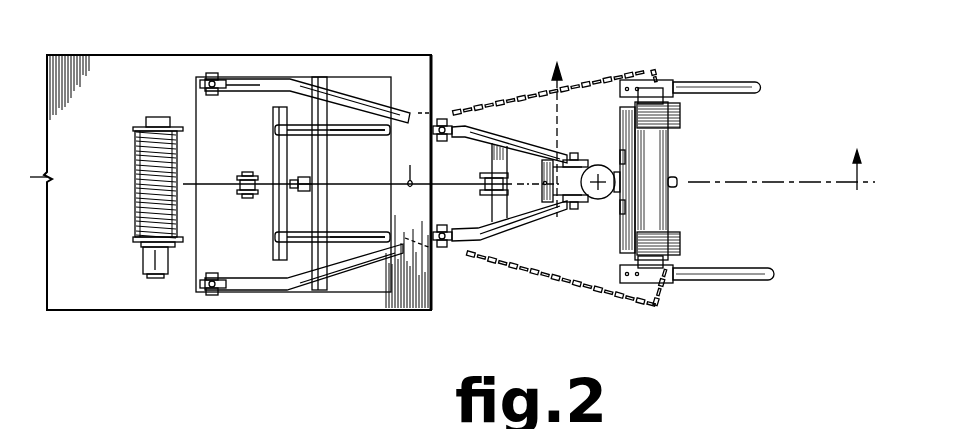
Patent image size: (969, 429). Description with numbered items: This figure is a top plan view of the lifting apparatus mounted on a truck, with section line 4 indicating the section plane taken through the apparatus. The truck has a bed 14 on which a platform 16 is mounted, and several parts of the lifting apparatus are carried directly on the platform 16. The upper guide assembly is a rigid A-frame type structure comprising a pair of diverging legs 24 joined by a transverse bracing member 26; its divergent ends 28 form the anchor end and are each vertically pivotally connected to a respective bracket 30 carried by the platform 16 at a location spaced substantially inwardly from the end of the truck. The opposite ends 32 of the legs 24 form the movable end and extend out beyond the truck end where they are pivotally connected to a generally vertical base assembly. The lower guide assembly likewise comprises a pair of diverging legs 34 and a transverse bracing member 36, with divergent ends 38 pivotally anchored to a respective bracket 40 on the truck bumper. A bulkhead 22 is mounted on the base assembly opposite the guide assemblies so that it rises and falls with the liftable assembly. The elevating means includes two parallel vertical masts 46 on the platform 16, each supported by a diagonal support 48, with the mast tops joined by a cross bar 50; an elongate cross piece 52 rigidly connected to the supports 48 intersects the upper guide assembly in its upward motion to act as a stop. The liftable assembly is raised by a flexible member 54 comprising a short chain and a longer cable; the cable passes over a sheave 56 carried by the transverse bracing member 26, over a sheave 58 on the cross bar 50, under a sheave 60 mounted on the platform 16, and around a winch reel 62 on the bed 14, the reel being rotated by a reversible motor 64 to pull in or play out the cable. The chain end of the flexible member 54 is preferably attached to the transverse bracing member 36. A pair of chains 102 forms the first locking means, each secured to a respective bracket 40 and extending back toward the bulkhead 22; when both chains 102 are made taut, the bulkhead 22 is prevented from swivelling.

The section line 4- 4 is at (705, 127).
The bed 14 is at (419, 86).
The platform 16 is at (357, 288).
The bulkhead 22 is at (690, 141).
The diverging legs 24 is at (262, 78).
The transverse bracing member 26 is at (503, 163).
The divergent ends 28 is at (198, 83).
The bracket 30 is at (222, 76).
The opposite ends 32 is at (575, 155).
The diverging legs 34 is at (488, 132).
The transverse bracing member 36 is at (547, 205).
The divergent ends 38 is at (437, 120).
The bracket 40 is at (450, 125).
The vertical masts 46 is at (273, 129).
The diagonal support 48 is at (351, 123).
The cross bar 50 is at (273, 215).
The cross piece 52 is at (330, 290).
The flexible member 54 is at (409, 166).
The sheave 56 is at (485, 175).
The sheave 58 is at (303, 182).
The sheave 60 is at (240, 178).
The winch reel 62 is at (135, 161).
The reversible motor 64 is at (143, 266).
The chains 102 is at (605, 78).